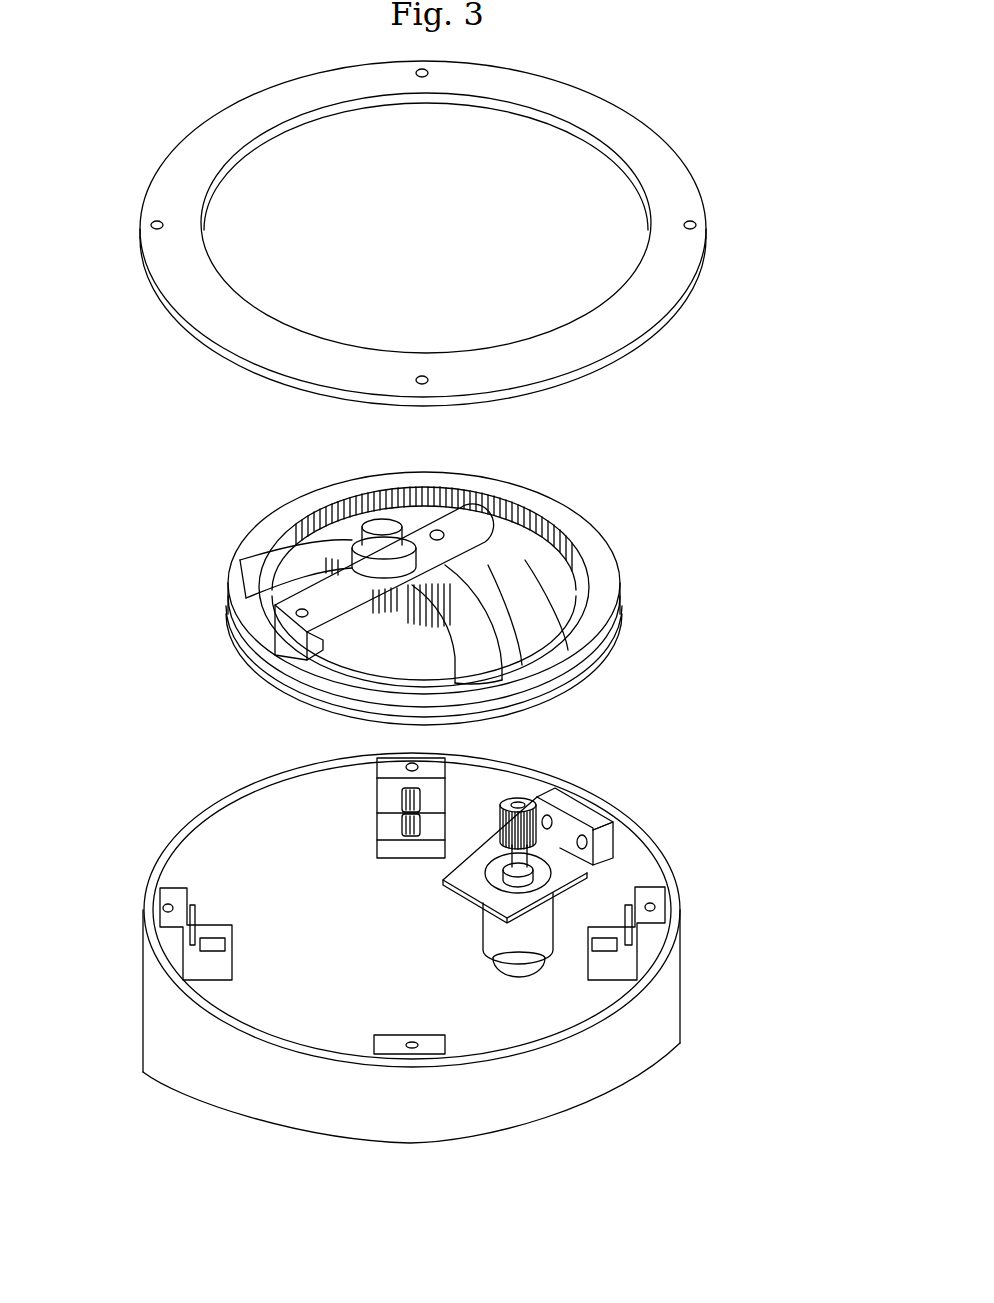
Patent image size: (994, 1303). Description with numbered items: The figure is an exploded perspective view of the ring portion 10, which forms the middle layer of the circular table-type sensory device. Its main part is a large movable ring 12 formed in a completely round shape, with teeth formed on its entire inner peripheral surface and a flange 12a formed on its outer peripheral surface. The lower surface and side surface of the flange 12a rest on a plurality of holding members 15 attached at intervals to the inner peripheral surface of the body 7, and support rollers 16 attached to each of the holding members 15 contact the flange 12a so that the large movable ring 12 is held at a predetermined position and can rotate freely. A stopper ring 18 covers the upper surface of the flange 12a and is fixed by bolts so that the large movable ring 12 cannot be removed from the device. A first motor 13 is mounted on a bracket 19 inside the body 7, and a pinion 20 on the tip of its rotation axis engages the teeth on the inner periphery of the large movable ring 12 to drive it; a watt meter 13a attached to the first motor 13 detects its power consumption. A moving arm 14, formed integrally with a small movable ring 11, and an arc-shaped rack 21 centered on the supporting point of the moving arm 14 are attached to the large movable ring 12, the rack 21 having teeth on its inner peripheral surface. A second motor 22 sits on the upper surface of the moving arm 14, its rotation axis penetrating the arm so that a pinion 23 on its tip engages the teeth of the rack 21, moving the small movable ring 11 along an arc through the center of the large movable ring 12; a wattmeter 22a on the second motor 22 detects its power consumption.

The body 7 is at (682, 923).
The ring portion 10 is at (448, 577).
The small movable ring 11 is at (487, 497).
The large movable ring 12 is at (596, 548).
The flange 12a is at (626, 601).
The first motor 13 is at (601, 935).
The watt meter 13a is at (523, 953).
The moving arm 14 is at (332, 552).
The holding members 15 is at (377, 793).
The support rollers 16 is at (397, 827).
The stopper ring 18 is at (700, 186).
The bracket 19 is at (573, 816).
The pinion 20 is at (524, 797).
The rack 21 is at (266, 541).
The second motor 22 is at (424, 558).
The wattmeter 22a is at (352, 510).
The pinion 23 is at (385, 610).